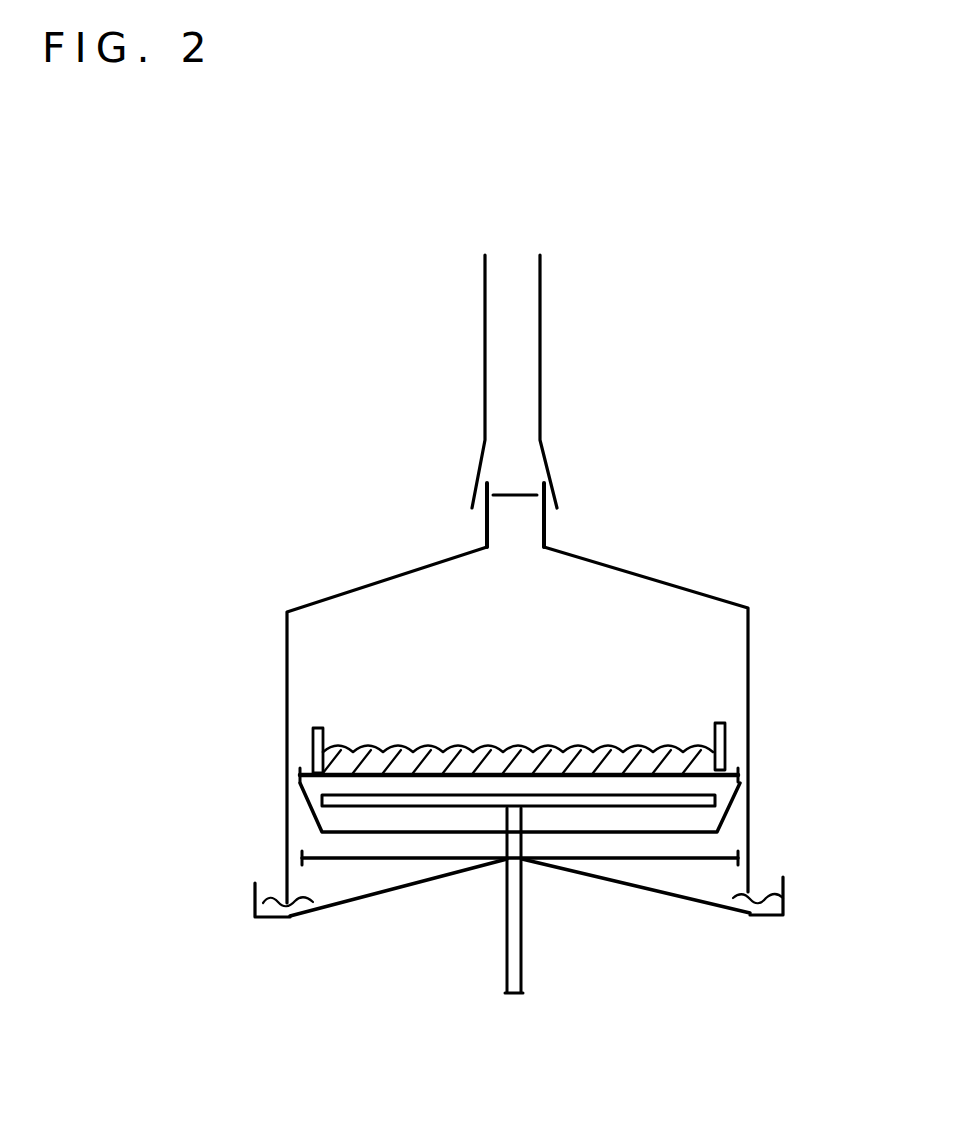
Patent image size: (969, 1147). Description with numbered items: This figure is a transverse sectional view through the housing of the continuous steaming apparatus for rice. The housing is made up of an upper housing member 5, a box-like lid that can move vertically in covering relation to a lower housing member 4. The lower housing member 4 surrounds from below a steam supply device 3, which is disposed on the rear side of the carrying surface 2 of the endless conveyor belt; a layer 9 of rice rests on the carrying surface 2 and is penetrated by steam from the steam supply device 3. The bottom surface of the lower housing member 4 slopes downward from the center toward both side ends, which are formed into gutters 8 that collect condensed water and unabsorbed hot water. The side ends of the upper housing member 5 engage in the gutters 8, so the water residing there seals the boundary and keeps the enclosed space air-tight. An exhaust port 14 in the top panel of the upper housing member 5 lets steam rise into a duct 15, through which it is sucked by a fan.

The carrying surface 2 is at (498, 775).
The steam supply device 3 is at (602, 797).
The lower housing member 4 is at (253, 892).
The upper housing member 5 is at (672, 582).
The gutters 8 is at (272, 883).
The rice layer 9 is at (358, 750).
The exhaust port 14 is at (515, 526).
The duct 15 is at (541, 333).